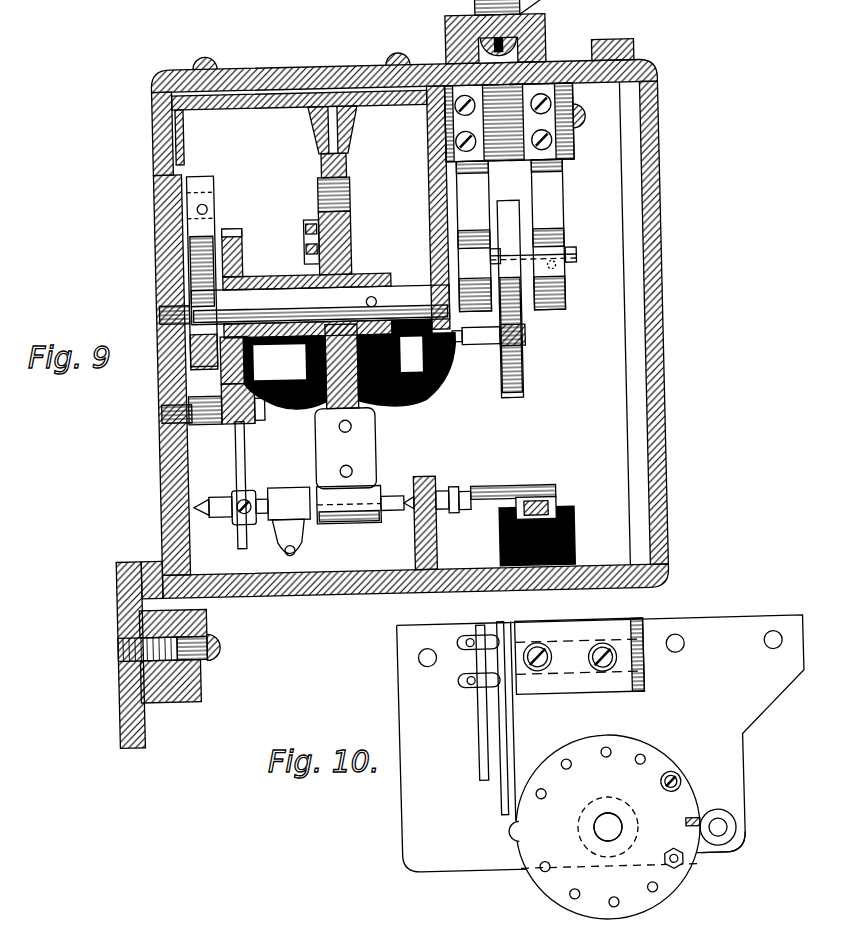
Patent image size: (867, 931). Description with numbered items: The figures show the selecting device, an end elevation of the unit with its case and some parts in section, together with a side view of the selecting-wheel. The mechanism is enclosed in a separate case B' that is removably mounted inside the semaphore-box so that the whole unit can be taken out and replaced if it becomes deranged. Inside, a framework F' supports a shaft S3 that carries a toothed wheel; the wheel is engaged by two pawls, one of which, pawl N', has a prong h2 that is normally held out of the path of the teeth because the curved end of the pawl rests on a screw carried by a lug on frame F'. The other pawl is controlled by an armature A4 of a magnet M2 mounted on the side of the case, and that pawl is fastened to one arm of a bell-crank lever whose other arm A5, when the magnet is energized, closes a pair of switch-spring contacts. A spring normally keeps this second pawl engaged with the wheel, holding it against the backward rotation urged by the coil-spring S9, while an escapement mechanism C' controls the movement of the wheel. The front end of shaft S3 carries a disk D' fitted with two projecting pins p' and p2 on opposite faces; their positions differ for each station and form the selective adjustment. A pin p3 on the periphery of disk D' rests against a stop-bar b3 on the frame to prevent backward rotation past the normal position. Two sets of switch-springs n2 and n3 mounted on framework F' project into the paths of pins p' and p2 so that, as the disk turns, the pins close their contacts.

In FIG. 9, the coil-spring S9 is at (208, 206).
In FIG. 9, the prong h2 is at (340, 194).
In FIG. 9, the pawl N' is at (353, 141).
In FIG. 9, the framework F' is at (412, 208).
In FIG. 10, the framework F' is at (603, 744).
In FIG. 9, the shaft S3 is at (282, 300).
In FIG. 10, the shaft S3 is at (608, 830).
In FIG. 9, the switch-springs n3 is at (470, 268).
In FIG. 9, the projecting pin p' is at (546, 247).
In FIG. 10, the projecting pin p' is at (708, 765).
In FIG. 9, the switch-springs n2 is at (566, 292).
In FIG. 10, the switch-springs n2 is at (516, 830).
In FIG. 9, the case B' is at (408, 374).
In FIG. 9, the armature A4 is at (328, 350).
In FIG. 9, the projecting pin p2 is at (478, 342).
In FIG. 10, the projecting pin p2 is at (680, 868).
In FIG. 9, the disk D' is at (537, 298).
In FIG. 10, the disk D' is at (608, 827).
In FIG. 9, the escapement mechanism C' is at (244, 400).
In FIG. 9, the bell-crank lever arm A5 is at (330, 471).
In FIG. 9, the magnet M2 is at (380, 396).
In FIG. 10, the pin p3 is at (736, 828).
In FIG. 10, the stop-bar b3 is at (736, 852).